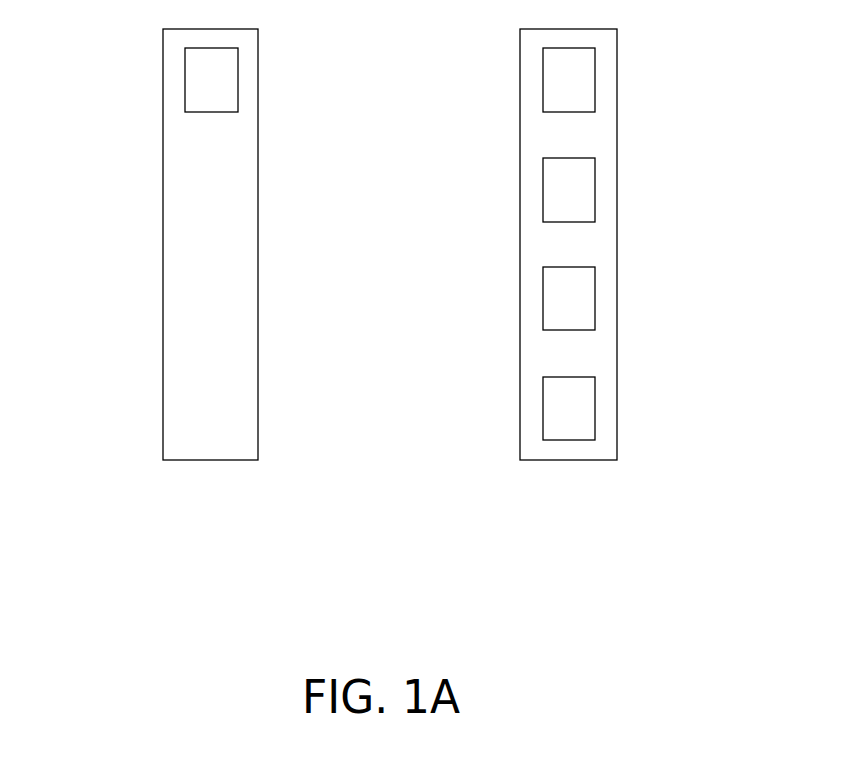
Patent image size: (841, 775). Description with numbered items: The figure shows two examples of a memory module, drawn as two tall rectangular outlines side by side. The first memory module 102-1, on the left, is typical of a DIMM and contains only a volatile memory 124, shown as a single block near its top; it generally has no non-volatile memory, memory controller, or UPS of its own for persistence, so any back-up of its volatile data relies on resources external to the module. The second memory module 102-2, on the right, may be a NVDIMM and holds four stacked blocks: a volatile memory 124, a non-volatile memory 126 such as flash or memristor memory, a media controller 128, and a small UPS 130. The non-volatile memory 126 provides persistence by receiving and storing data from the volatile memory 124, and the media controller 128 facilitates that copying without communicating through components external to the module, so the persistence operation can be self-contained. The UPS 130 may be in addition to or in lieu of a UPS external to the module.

The memory module 102-1 is at (163, 302).
The memory module 102-2 is at (520, 298).
The volatile memory 124 is at (238, 78).
The non-volatile memory 126 is at (595, 188).
The media controller 128 is at (595, 297).
The small UPS 130 is at (595, 410).